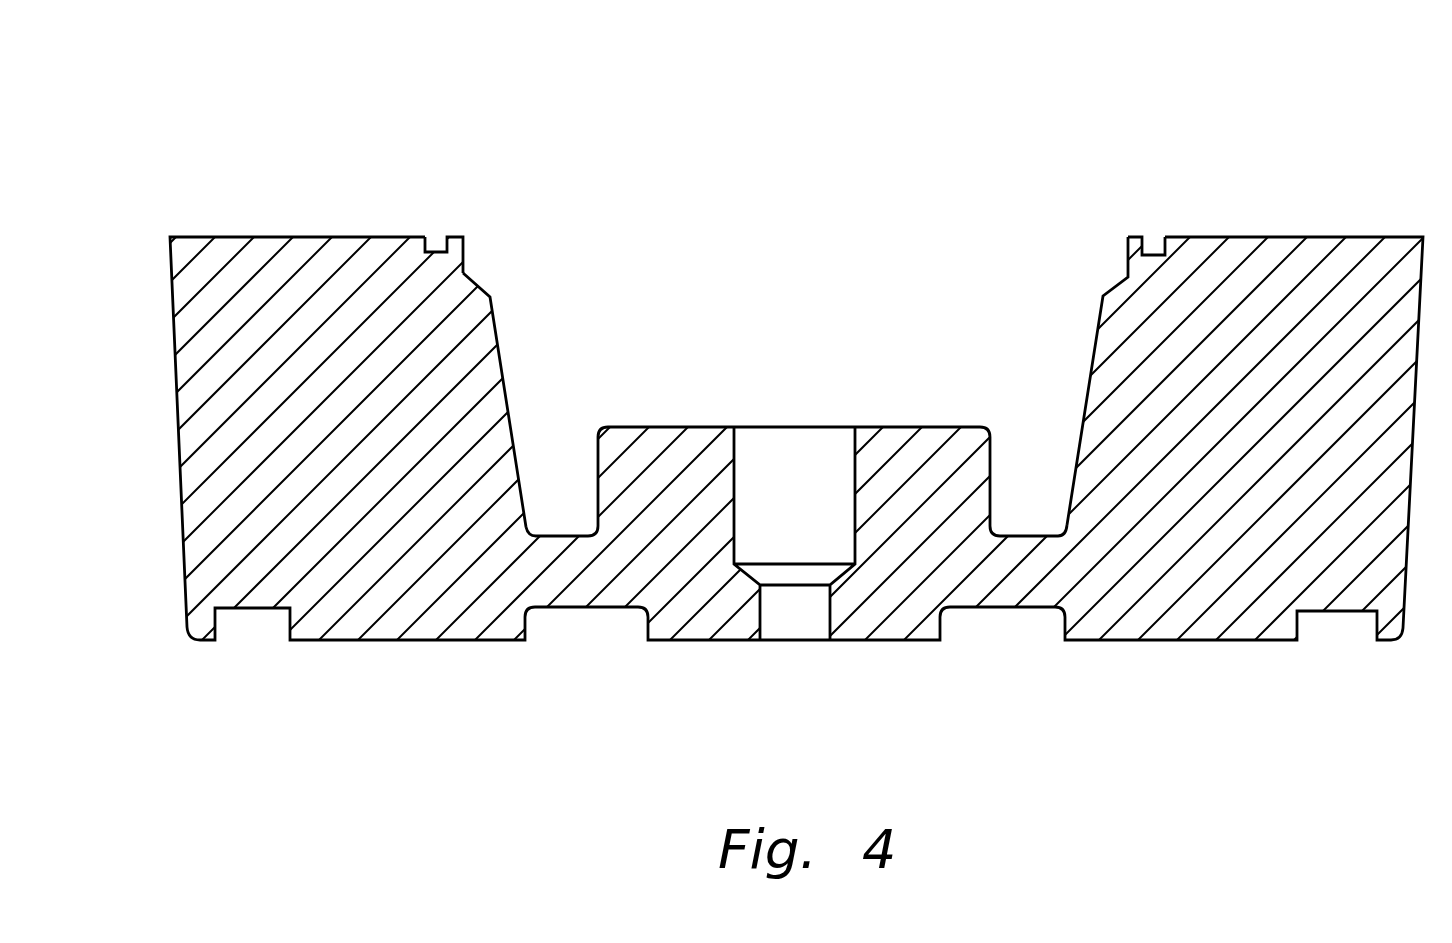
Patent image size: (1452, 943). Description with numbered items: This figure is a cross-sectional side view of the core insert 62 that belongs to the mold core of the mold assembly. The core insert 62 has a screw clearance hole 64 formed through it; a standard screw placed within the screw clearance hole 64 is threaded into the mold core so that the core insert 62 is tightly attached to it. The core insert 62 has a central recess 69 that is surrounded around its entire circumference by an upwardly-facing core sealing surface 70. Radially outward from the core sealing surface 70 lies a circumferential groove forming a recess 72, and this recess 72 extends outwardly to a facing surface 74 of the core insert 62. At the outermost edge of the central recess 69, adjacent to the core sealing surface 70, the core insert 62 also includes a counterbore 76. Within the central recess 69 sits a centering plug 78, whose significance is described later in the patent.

The core insert 62 is at (682, 662).
The screw clearance hole 64 is at (740, 483).
The central recess 69 is at (795, 275).
The core sealing surface 70 is at (1128, 237).
The recess 72 is at (1153, 245).
The facing surface 74 is at (277, 235).
The counterbore 76 is at (470, 247).
The centering plug 78 is at (598, 478).